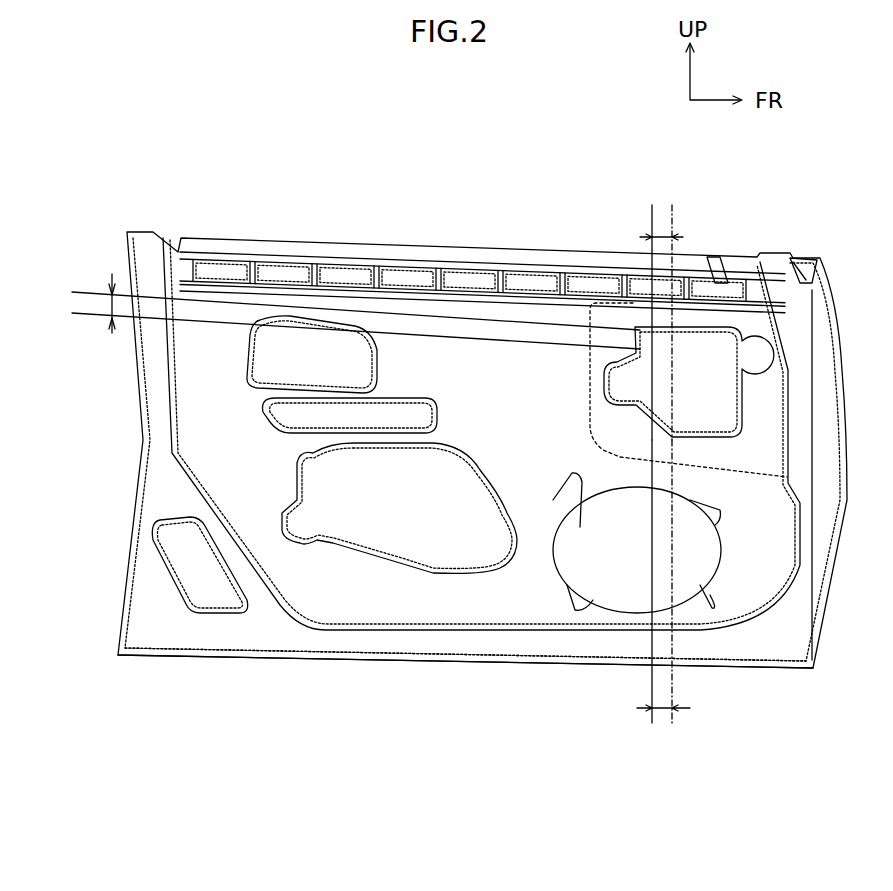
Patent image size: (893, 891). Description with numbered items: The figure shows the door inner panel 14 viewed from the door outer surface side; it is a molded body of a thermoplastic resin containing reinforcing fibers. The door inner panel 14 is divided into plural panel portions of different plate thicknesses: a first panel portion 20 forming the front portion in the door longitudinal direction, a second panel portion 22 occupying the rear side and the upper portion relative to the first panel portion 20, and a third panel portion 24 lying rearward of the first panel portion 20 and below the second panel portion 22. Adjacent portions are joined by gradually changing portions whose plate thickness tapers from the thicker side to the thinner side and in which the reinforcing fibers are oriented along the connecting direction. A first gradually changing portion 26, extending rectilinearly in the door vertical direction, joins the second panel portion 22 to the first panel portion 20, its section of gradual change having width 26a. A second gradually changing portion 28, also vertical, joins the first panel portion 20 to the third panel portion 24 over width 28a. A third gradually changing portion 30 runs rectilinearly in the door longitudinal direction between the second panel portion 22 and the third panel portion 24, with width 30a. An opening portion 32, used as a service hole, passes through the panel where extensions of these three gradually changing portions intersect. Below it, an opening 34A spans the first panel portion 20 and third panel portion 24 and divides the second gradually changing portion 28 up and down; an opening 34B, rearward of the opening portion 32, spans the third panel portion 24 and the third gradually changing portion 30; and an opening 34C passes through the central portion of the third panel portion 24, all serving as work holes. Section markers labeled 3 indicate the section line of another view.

The door inner panel 14 is at (727, 208).
The first panel portion 20 is at (755, 598).
The second panel portion 22 is at (552, 317).
The third panel portion 24 is at (505, 610).
The first gradually changing portion 26 is at (663, 312).
The width of the range of gradual change 26a is at (663, 230).
The second gradually changing portion 28 is at (663, 450).
The width of the range of gradual change 28a is at (663, 713).
The third gradually changing portion 30 is at (487, 330).
The width of the range of gradual change 30a is at (110, 302).
The opening portion 32 is at (640, 357).
The opening 34A is at (562, 573).
The opening 34B is at (258, 357).
The opening 34C is at (377, 537).
The section line of FIG. 3 is at (475, 273).